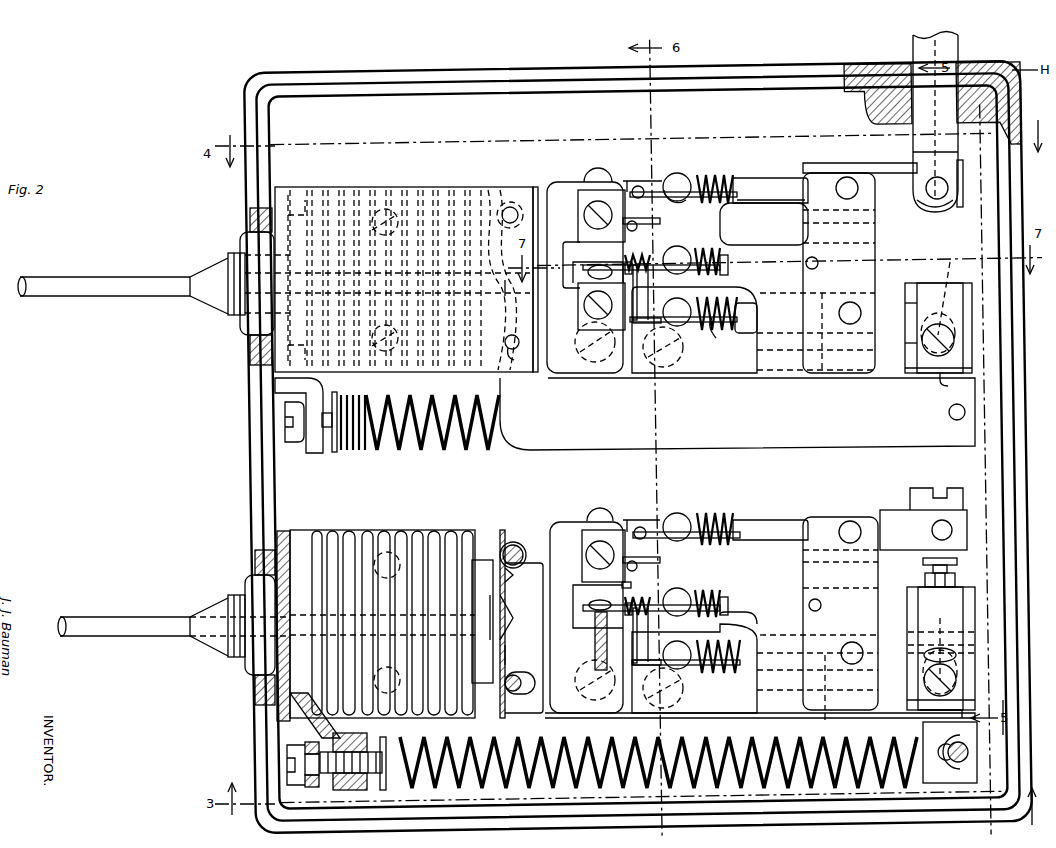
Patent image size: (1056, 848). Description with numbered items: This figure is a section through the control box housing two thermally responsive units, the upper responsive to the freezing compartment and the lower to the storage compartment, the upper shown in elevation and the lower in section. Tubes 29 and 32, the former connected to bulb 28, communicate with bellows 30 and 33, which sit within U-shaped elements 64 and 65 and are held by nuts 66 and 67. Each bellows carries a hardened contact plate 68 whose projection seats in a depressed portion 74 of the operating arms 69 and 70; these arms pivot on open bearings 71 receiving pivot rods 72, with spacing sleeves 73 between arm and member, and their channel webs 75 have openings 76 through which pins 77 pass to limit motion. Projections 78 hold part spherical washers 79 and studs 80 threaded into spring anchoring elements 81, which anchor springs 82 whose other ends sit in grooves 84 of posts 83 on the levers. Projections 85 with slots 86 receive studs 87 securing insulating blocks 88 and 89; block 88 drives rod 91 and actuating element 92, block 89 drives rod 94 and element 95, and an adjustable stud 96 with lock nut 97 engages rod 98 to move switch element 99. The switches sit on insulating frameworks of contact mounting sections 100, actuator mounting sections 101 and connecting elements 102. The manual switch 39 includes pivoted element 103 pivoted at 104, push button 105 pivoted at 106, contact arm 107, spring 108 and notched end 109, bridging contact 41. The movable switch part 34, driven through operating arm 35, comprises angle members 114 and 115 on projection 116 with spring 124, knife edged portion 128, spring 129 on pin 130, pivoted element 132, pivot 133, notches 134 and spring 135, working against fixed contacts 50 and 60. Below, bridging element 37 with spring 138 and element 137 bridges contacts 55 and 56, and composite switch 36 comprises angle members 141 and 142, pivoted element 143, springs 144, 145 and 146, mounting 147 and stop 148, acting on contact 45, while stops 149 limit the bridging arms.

The bulb 28 is at (826, 719).
The tube 29 is at (162, 277).
The bellows 30 is at (414, 187).
The tube 32 is at (172, 617).
The bellows 33 is at (365, 532).
The movable switch part 34 is at (686, 258).
The operating arm 35 is at (792, 452).
The composite switch mechanism 36 is at (690, 598).
The bridging switch element 37 is at (678, 522).
The manual switch 39 is at (690, 205).
The contact element 41 is at (650, 188).
The fixed contact 45 is at (632, 584).
The fixed contact 50 is at (575, 252).
The fixed contact 55 is at (633, 520).
The fixed contact 56 is at (600, 508).
The fixed contact 60 is at (595, 345).
The U-shaped element 64 is at (297, 193).
The U-shaped element 65 is at (284, 535).
The nut 66 is at (242, 244).
The nut 67 is at (250, 582).
The contact plate 68 is at (492, 190).
The operating arm 69 is at (508, 300).
The operating arm 70 is at (785, 711).
The open bearing 71 is at (514, 208).
The pivot rod 72 is at (518, 215).
The spacing sleeve 73 is at (522, 548).
The depressed portion 74 is at (506, 288).
The web 75 is at (506, 711).
The opening 76 is at (525, 674).
The pin 77 is at (494, 688).
The projection 78 is at (312, 455).
The part spherical washer 79 is at (287, 745).
The stud 80 is at (285, 413).
The spring anchoring element 81 is at (334, 455).
The spring 82 is at (410, 452).
The post 83 is at (949, 412).
The groove 84 is at (946, 758).
The projection 85 is at (905, 369).
The slot 86 is at (950, 374).
The stud 87 is at (922, 342).
The insulating block 88 is at (924, 283).
The insulating block 89 is at (941, 648).
The rod 91 is at (953, 290).
The actuating element 92 is at (908, 295).
The rod 94 is at (941, 642).
The actuating element 95 is at (918, 632).
The stud 96 is at (950, 562).
The lock nut 97 is at (925, 580).
The rod 98 is at (932, 530).
The switch element 99 is at (890, 510).
The contact mounting section 100 is at (565, 375).
The actuator mounting section 101 is at (850, 375).
The connecting element 102 is at (735, 375).
The pivotally mounted element 103 is at (891, 172).
The pivot 104 is at (847, 177).
The push button 105 is at (958, 46).
The pivot pin 106 is at (930, 206).
The movable contact arm 107 is at (680, 176).
The spring 108 is at (722, 176).
The notched end 109 is at (748, 194).
The angle member 114 is at (578, 300).
The angle member 115 is at (651, 291).
The projection 116 is at (778, 245).
The spring 124 is at (648, 255).
The knife edged portion 128 is at (729, 264).
The spring 129 is at (716, 256).
The pin 130 is at (806, 266).
The pivoted element 132 is at (733, 330).
The pivot 133 is at (850, 302).
The notch 134 is at (745, 312).
The spring 135 is at (745, 330).
The bridging element 137 is at (710, 518).
The spring 138 is at (740, 520).
The angle member 141 is at (580, 598).
The angle member 142 is at (651, 636).
The pivoted element 143 is at (712, 672).
The spring 144 is at (738, 640).
The spring 145 is at (720, 603).
The spring 146 is at (648, 600).
The mounting projection 147 is at (730, 600).
The stop 148 is at (594, 632).
The stop 149 is at (660, 221).